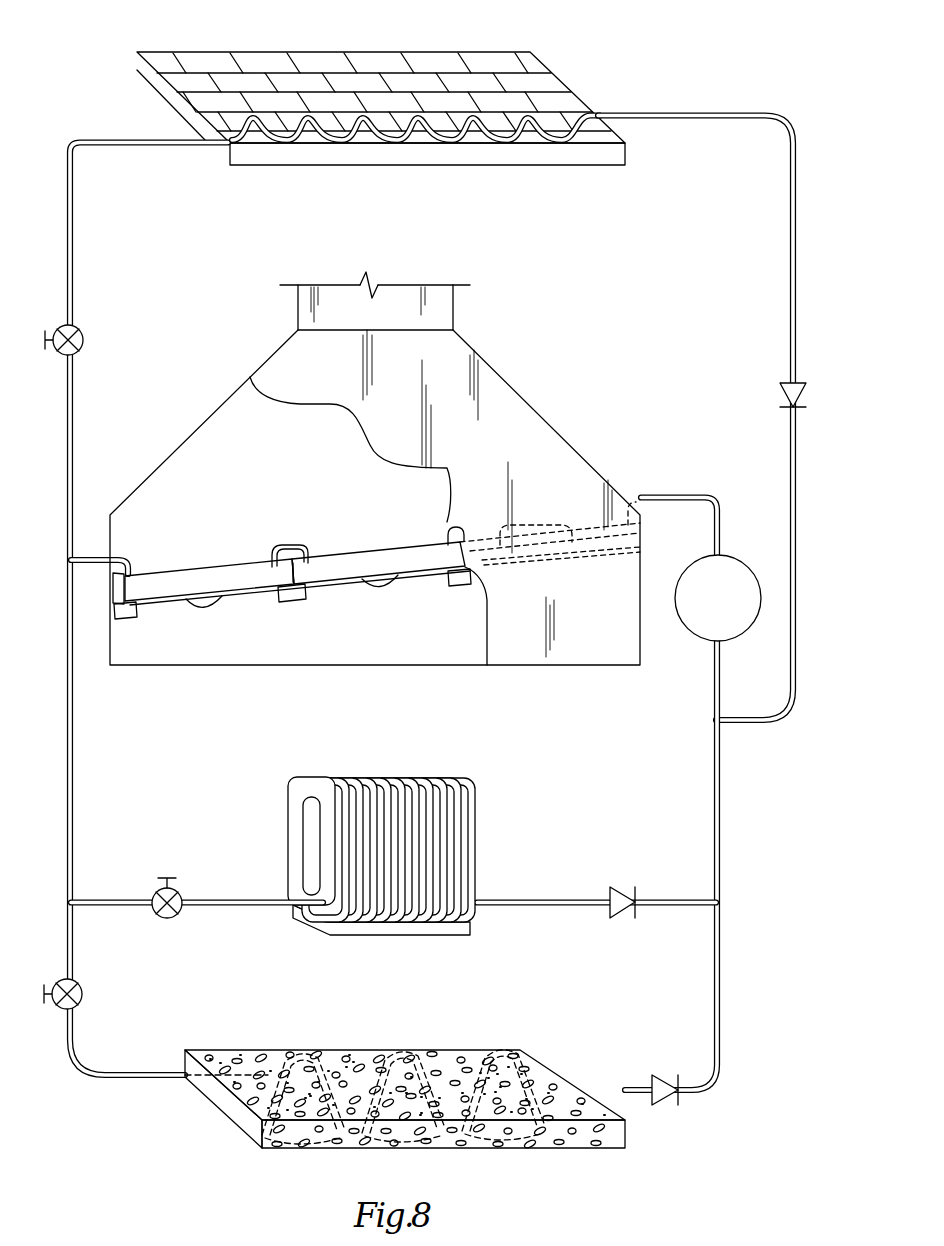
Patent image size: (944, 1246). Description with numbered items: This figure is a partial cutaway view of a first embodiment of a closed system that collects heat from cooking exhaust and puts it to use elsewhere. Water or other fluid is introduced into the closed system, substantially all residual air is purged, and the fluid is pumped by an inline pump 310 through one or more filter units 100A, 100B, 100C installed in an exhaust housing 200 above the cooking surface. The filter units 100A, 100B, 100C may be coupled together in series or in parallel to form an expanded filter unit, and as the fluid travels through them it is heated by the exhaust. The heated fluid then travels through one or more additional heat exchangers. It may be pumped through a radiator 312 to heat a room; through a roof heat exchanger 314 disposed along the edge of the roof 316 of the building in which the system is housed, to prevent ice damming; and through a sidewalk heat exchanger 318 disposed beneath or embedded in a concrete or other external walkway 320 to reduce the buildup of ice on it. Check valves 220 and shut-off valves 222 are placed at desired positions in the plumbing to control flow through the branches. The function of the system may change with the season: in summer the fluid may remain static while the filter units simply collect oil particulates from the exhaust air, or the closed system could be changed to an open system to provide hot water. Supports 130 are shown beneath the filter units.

The roof heat exchanger 314 is at (160, 62).
The roof 316 is at (527, 150).
The shut-off valve 222 is at (84, 340).
The check valve 220 is at (778, 396).
The exhaust housing 200 is at (482, 444).
The filter unit 100A is at (562, 565).
The filter unit 100B is at (371, 556).
The filter unit 100C is at (205, 577).
The support feet 130 is at (205, 606).
The inline pump 310 is at (736, 558).
The radiator 312 is at (478, 864).
The sidewalk heat exchanger 318 is at (399, 1071).
The external walkway 320 is at (245, 1050).